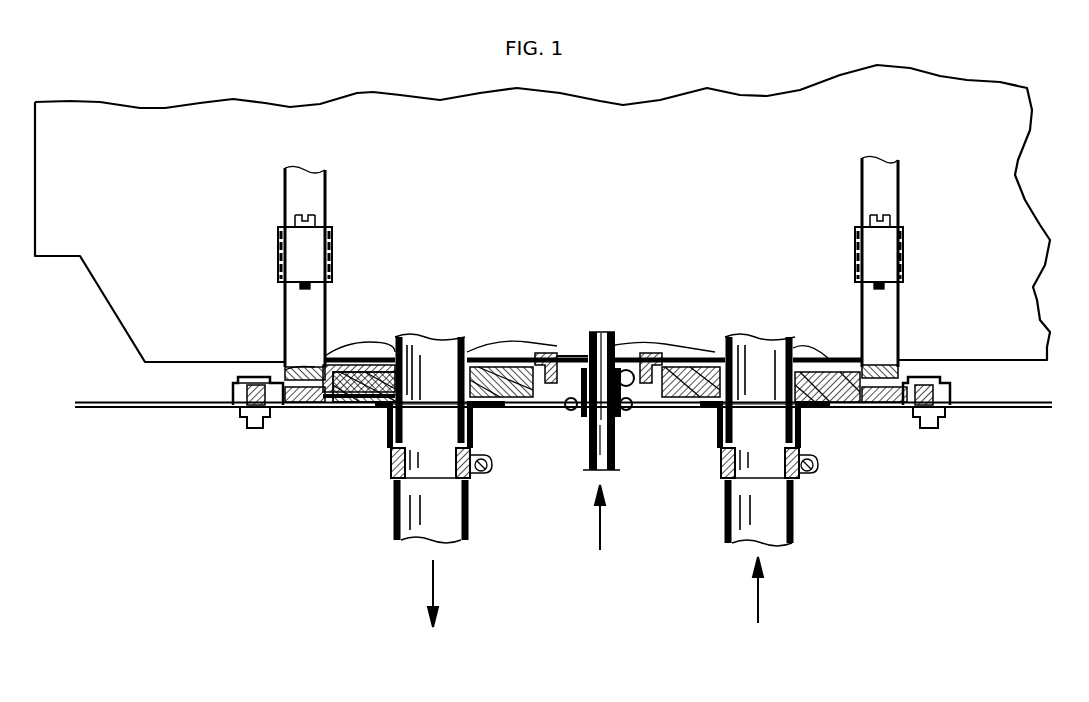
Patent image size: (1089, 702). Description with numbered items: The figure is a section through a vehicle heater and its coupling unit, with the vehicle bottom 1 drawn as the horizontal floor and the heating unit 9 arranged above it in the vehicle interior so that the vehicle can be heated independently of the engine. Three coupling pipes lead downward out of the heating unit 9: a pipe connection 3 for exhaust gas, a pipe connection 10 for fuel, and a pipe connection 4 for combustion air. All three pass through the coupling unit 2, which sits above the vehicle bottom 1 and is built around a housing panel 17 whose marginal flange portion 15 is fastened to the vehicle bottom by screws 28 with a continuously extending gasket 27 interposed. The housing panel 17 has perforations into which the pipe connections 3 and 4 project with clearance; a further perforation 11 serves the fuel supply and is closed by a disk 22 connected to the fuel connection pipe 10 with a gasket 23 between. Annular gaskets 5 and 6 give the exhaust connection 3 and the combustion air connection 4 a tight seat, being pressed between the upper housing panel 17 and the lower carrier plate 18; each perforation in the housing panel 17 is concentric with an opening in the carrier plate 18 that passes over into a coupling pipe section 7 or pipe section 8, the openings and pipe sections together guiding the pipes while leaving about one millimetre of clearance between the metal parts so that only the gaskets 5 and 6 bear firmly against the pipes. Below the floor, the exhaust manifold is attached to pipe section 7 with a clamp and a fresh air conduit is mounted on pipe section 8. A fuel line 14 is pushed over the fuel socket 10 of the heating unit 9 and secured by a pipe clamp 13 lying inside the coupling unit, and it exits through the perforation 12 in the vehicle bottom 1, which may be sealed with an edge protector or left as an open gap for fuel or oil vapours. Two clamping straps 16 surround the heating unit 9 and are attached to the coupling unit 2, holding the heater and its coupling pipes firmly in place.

The vehicle bottom 1 is at (168, 407).
The coupling unit 2 is at (346, 357).
The pipe connection for exhaust gas 3 is at (455, 345).
The pipe connection for combustion air 4 is at (740, 357).
The annular gasket 5 is at (330, 407).
The annular gasket 6 is at (842, 407).
The coupling pipe section 7 is at (390, 455).
The pipe section 8 is at (800, 435).
The heating unit 9 is at (580, 185).
The pipe connection for fuel 10 is at (615, 343).
The perforation 11 is at (568, 370).
The perforation 12 is at (577, 407).
The pipe clamp 13 is at (633, 380).
The fuel line 14 is at (618, 457).
The flange portion 15 is at (232, 388).
The clamping straps 16 is at (295, 200).
The housing panel 17 is at (368, 357).
The carrier plate 18 is at (360, 407).
The disk 22 is at (555, 353).
The gasket 23 is at (657, 353).
The gasket 27 is at (300, 407).
The screws 28 is at (245, 420).